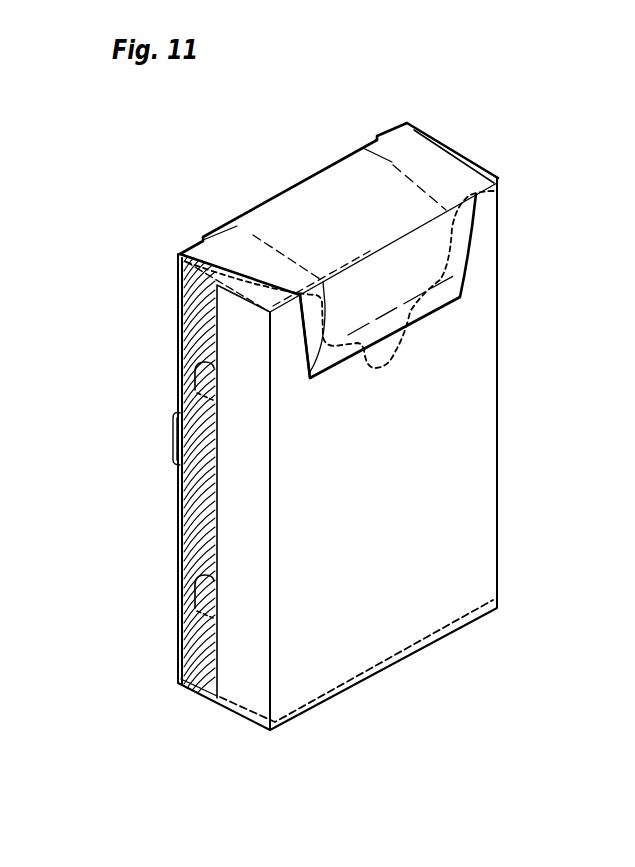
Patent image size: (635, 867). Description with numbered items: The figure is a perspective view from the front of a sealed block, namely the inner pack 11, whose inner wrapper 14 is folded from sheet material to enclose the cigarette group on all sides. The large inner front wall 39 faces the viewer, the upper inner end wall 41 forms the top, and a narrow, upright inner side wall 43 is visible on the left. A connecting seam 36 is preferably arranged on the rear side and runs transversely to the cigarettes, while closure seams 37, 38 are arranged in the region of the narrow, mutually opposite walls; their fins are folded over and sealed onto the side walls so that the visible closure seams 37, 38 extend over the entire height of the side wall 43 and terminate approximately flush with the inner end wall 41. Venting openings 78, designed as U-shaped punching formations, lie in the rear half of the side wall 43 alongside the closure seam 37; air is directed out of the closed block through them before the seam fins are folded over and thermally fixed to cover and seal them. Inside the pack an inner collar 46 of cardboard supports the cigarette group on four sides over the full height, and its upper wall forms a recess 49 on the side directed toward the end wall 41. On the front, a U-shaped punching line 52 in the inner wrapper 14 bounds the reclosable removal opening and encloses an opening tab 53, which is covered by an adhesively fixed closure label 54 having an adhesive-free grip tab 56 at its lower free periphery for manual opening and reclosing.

The inner pack 11 is at (546, 301).
The inner wrapper 14 is at (498, 452).
The connecting seam 36 is at (173, 451).
The closure seam 37 is at (197, 492).
The closure seam 38 is at (436, 144).
The inner front wall 39 is at (373, 501).
The upper inner end wall 41 is at (416, 147).
The inner side wall 43 is at (240, 525).
The inner collar 46 is at (481, 194).
The recess 49 is at (408, 345).
The punching line 52 is at (254, 236).
The opening tab 53 is at (322, 210).
The closure label 54 is at (364, 136).
The grip tab 56 is at (327, 358).
The venting openings 78 is at (195, 387).